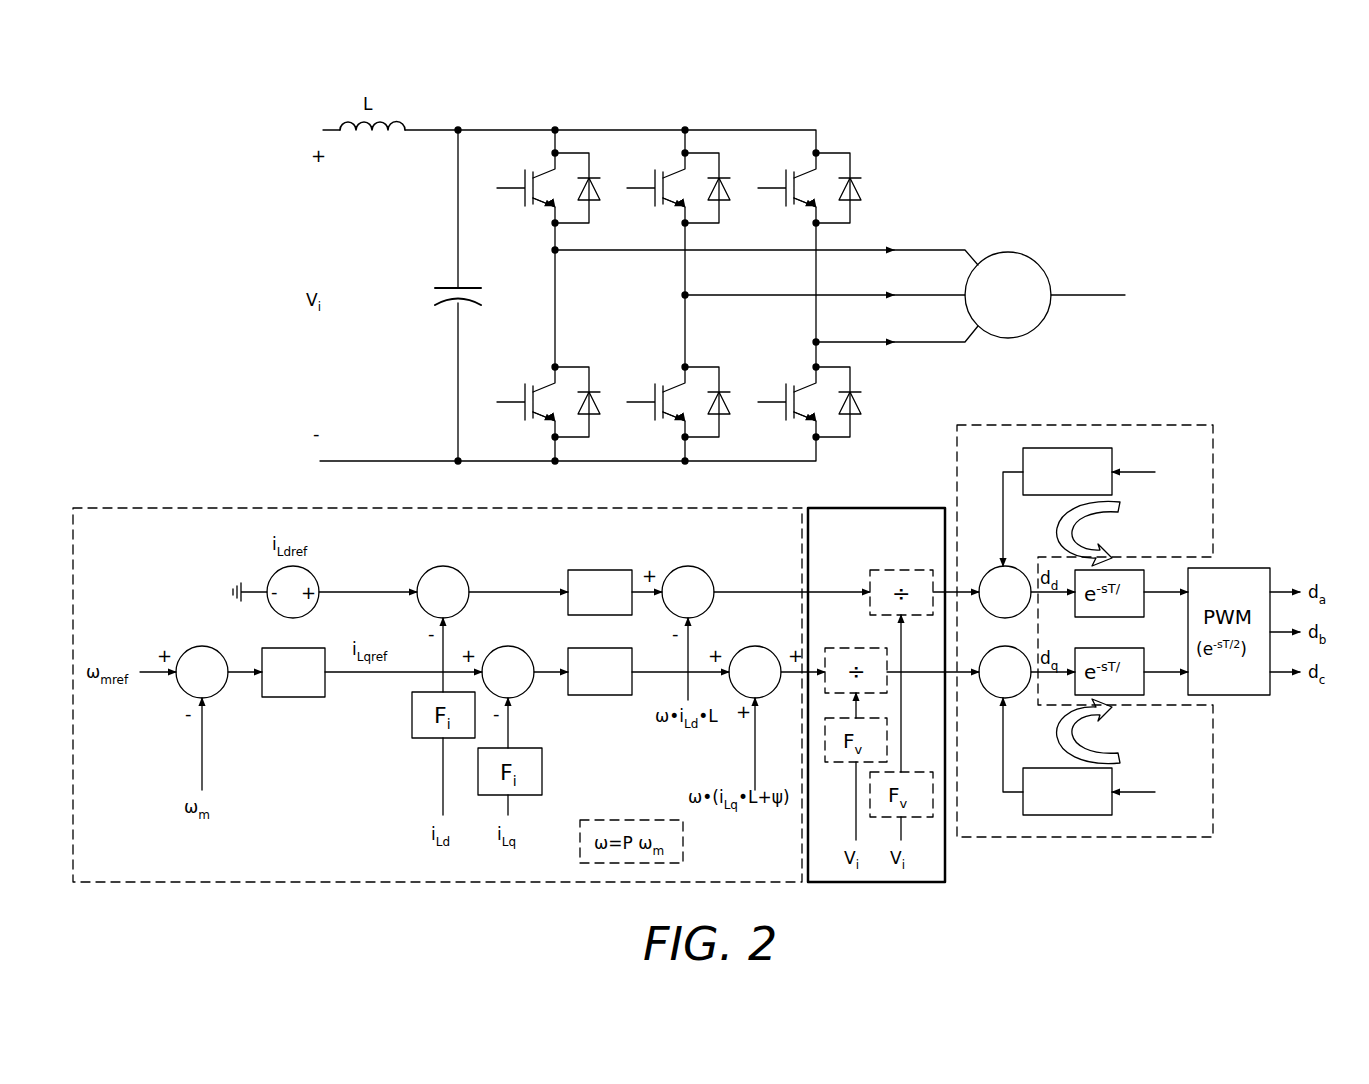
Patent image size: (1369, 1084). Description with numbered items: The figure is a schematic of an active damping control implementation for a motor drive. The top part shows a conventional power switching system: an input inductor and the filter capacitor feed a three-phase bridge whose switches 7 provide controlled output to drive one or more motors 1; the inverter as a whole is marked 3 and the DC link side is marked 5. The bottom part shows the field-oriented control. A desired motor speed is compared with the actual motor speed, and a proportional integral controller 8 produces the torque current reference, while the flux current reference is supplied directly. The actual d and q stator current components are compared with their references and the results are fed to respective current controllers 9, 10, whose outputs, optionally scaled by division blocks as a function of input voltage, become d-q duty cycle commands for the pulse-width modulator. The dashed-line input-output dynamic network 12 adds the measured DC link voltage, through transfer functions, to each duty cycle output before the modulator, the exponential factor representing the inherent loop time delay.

The motor 1 is at (1005, 252).
The inverter 3 is at (509, 100).
The DC link capacitor 5 is at (405, 240).
The switches 7 is at (627, 180).
The proportional integral controller PIw 8 is at (292, 697).
The controller 9 is at (598, 570).
The controller 10 is at (603, 697).
The input-output dynamic network 12 is at (1190, 425).